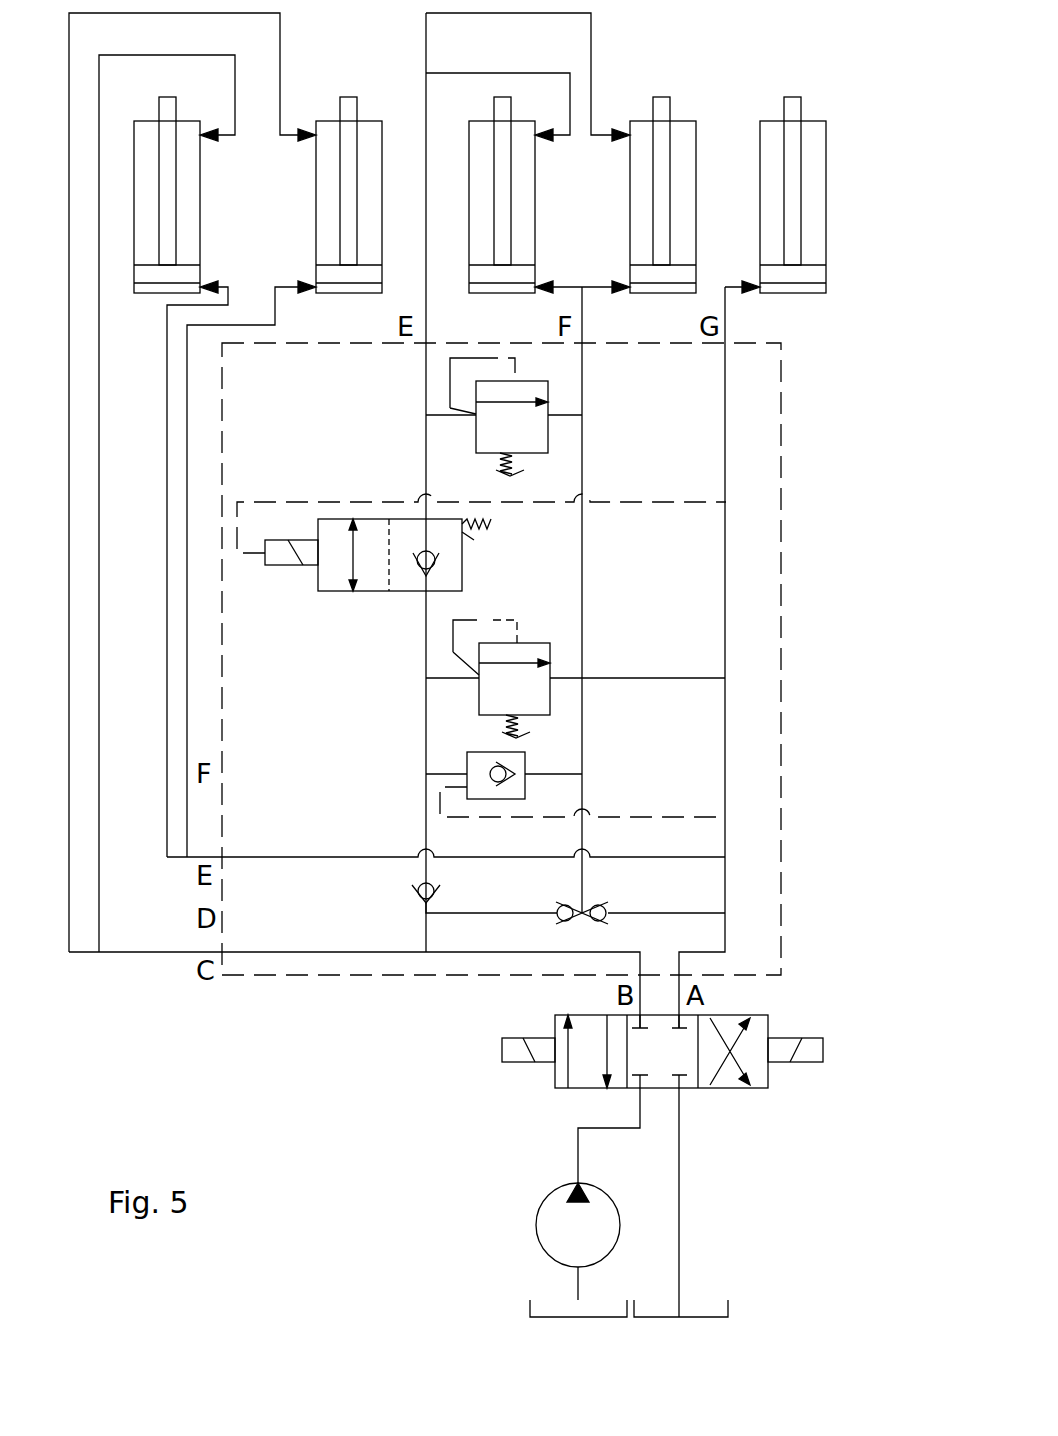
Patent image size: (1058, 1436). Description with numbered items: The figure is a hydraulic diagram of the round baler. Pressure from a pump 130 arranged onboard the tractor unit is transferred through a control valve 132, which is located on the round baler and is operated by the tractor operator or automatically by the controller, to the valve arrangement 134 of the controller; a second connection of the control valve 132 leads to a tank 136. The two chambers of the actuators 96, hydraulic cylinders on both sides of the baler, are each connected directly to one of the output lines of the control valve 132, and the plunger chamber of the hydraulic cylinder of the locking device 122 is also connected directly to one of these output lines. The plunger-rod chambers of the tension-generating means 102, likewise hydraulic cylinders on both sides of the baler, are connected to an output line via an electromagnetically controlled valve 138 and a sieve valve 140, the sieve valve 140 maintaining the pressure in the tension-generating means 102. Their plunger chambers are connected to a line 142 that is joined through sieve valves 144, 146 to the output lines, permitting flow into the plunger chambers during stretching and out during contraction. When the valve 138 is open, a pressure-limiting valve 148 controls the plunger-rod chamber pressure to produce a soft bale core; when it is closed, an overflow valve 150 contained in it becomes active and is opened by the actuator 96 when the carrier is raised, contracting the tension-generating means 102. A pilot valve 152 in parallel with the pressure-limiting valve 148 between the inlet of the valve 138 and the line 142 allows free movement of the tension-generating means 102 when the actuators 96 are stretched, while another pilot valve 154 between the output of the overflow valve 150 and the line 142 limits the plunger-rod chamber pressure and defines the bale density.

The actuator 96 is at (143, 233).
The tension-generating means 102 is at (480, 190).
The locking device 122 is at (815, 177).
The pump 130 is at (536, 1227).
The control valve 132 is at (737, 1090).
The valve arrangement 134 is at (792, 602).
The tank 136 is at (728, 1308).
The electromagnetically controlled valve 138 is at (462, 571).
The sieve valve 140 is at (442, 896).
The line 142 is at (584, 400).
The sieve valve 144 is at (560, 925).
The sieve valve 146 is at (593, 905).
The pressure-limiting valve 148 is at (550, 698).
The overflow valve 150 is at (408, 573).
The pilot valve 152 is at (525, 785).
The pilot valve 154 is at (548, 392).